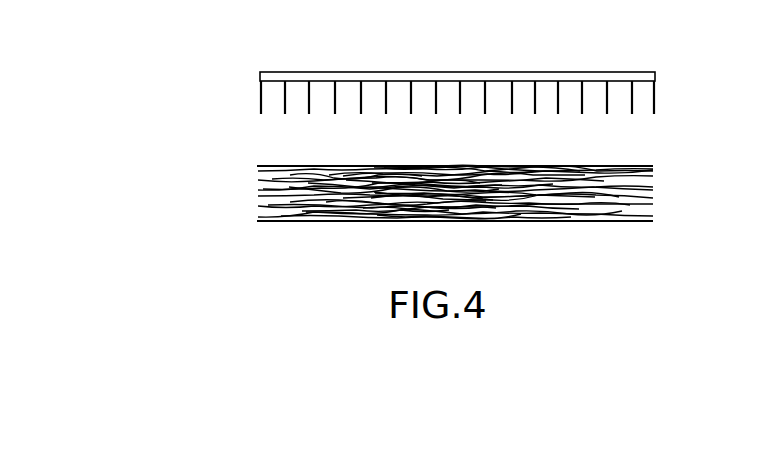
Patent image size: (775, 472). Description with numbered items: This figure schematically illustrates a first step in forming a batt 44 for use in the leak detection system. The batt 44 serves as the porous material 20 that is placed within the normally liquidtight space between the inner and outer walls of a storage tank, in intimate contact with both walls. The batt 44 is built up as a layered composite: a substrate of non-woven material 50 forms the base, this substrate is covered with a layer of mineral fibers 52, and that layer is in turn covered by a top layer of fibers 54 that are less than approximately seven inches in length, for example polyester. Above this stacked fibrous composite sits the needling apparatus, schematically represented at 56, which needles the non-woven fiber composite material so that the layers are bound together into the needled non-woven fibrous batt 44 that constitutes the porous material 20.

The porous material 20 is at (499, 199).
The batt 44 is at (482, 210).
The substrate of non-woven material 50 is at (570, 222).
The layer of mineral fibers 52 is at (643, 193).
The top layer of fibers 54 is at (602, 164).
The needling apparatus 56 is at (545, 72).